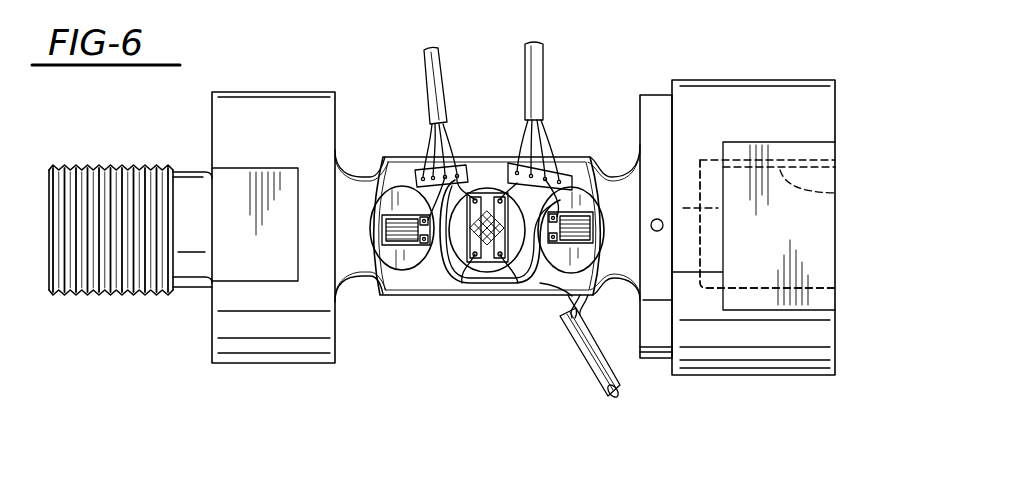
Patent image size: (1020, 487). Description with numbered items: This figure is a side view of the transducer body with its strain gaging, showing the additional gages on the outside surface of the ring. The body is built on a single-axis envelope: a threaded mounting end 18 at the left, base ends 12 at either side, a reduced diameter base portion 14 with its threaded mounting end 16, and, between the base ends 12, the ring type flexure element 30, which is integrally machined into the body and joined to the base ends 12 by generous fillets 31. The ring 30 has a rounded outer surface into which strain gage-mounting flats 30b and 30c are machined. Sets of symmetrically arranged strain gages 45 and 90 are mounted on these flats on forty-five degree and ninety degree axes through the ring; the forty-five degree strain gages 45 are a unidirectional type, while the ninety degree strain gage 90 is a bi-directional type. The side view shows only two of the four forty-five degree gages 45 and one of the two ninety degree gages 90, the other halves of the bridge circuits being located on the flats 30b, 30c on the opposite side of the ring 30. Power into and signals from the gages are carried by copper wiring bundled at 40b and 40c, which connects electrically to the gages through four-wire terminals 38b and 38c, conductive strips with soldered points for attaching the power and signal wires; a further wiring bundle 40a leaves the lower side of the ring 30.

The base end 12 is at (243, 347).
The reduced diameter base portion 14 is at (657, 105).
The threaded mounting end 16 is at (838, 193).
The threaded mounting end 18 is at (106, 188).
The ring type flexure element 30 is at (446, 324).
The strain gage-mounting flat 30b is at (493, 262).
The strain gage-mounting flat 30c is at (416, 245).
The fillet 31 is at (349, 178).
The four-wire terminal 38b is at (568, 165).
The four-wire terminal 38c is at (462, 167).
The cable 40a is at (578, 358).
The copper wiring bundle 40b is at (537, 75).
The copper wiring bundle 40c is at (430, 88).
The 45° strain gage 45 is at (400, 243).
The 90° strain gage 90 is at (486, 190).